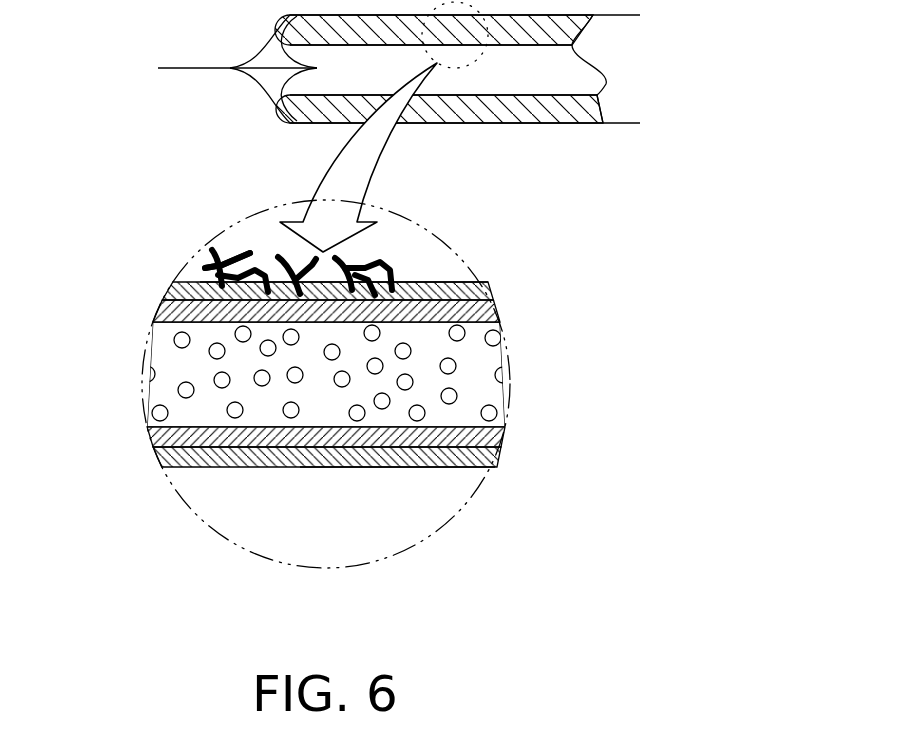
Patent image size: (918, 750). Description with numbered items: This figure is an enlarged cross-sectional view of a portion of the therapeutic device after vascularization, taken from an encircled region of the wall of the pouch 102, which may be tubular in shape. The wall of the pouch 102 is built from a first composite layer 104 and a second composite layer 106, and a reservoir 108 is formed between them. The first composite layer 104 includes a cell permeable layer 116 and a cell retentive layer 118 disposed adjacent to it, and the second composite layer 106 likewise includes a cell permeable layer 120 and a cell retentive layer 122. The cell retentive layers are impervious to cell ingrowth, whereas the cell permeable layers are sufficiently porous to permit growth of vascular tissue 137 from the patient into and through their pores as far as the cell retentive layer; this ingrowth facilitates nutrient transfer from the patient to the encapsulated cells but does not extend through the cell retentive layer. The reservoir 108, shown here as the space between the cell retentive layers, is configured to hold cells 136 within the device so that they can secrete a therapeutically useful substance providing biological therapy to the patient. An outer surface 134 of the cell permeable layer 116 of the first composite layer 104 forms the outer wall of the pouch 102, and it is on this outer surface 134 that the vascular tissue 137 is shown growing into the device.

The pouch 102 is at (568, 110).
The first composite layer 104 is at (410, 282).
The second composite layer 106 is at (447, 458).
The reservoir 108 is at (268, 472).
The cell permeable layer 116 is at (436, 292).
The cell retentive layer 118 is at (468, 313).
The cell permeable layer 120 is at (427, 458).
The cell retentive layer 122 is at (463, 436).
The outer surface 134 is at (184, 282).
The cells 136 is at (255, 380).
The vascular tissue 137 is at (215, 250).